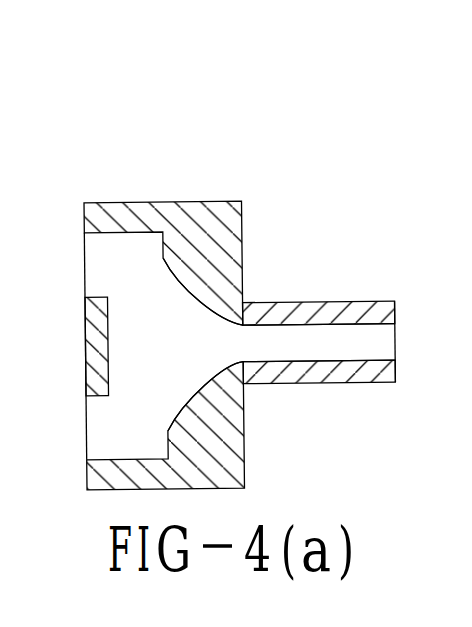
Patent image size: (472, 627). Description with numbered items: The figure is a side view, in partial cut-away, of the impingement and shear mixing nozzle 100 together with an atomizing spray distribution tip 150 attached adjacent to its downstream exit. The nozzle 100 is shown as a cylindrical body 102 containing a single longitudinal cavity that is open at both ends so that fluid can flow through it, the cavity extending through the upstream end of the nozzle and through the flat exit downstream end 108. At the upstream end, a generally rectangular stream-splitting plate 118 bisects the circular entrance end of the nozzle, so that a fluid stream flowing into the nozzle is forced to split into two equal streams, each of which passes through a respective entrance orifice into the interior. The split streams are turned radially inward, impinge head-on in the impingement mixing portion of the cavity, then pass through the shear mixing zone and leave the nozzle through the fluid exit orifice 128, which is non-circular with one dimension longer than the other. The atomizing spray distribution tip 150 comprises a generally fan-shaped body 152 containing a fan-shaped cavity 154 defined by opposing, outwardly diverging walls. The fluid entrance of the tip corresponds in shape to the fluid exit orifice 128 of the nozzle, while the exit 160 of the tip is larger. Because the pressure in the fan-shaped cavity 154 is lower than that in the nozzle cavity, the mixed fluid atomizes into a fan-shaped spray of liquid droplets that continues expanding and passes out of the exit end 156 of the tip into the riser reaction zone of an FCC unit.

The nozzle 100 is at (250, 254).
The cylindrical body 102 is at (210, 202).
The exit downstream end 108 is at (243, 452).
The stream-splitting plate 118 is at (84, 322).
The fluid exit orifice 128 is at (242, 342).
The atomizing spray distribution tip 150 is at (347, 278).
The fan-shaped body 152 is at (333, 303).
The fan-shaped cavity 154 is at (325, 338).
The exit end of the tip 156 is at (397, 373).
The exit of the tip 160 is at (395, 335).